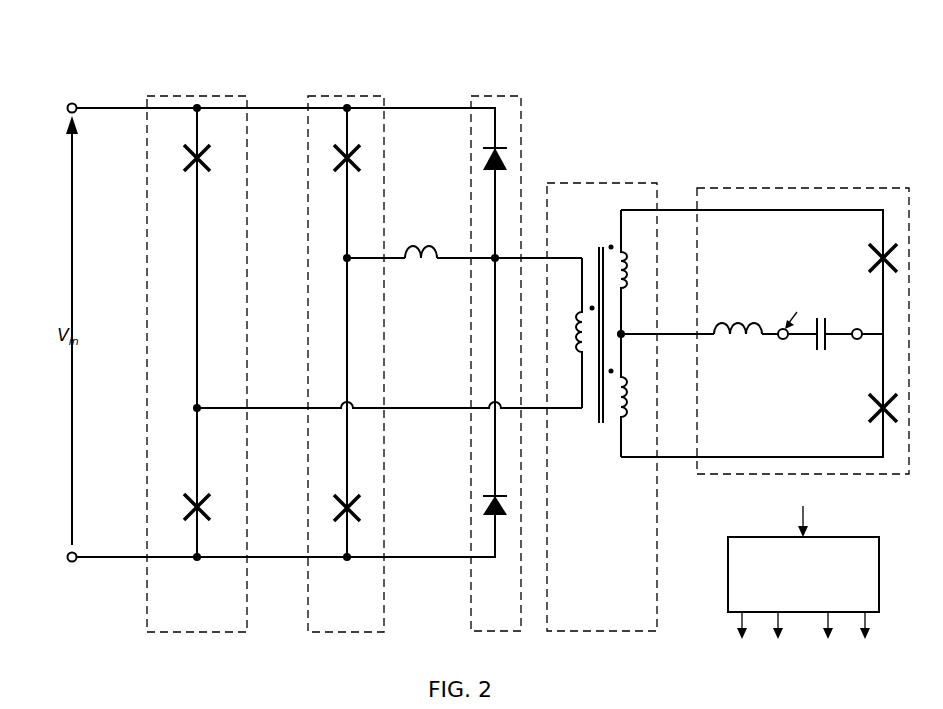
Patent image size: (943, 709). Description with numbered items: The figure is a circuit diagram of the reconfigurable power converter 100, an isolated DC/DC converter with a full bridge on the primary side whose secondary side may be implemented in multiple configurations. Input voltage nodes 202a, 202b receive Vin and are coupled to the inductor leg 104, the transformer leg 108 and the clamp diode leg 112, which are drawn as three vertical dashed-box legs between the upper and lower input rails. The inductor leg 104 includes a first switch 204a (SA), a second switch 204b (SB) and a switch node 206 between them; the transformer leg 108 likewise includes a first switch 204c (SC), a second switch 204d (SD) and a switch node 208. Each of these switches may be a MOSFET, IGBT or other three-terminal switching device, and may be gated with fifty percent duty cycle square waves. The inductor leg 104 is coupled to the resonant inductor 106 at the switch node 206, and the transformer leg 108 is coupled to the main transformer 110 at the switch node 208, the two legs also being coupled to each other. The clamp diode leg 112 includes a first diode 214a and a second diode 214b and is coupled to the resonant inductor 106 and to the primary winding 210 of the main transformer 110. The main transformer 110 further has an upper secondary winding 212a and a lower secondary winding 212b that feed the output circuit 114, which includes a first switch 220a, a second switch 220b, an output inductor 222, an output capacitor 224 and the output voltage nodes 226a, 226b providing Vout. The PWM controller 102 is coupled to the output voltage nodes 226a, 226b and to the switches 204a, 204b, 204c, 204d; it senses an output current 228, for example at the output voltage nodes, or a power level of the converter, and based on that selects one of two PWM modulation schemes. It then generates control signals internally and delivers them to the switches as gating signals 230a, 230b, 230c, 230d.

The reconfigurable power converter 100 is at (78, 76).
The pulse-width modulation (PWM) controller 102 is at (778, 392).
The inductor leg 104 is at (345, 375).
The resonant inductor 106 is at (424, 250).
The transformer leg 108 is at (196, 369).
The main transformer 110 is at (629, 407).
The clamp diode leg 112 is at (507, 370).
The output circuit 114 is at (763, 314).
The input voltage node 202a is at (68, 112).
The input voltage node 202b is at (68, 561).
The first switch 204a is at (372, 158).
The second switch 204b is at (372, 504).
The first switch 204c is at (212, 176).
The second switch 204d is at (212, 496).
The switch node 206 is at (343, 257).
The switch node 208 is at (199, 404).
The primary winding 210 is at (586, 312).
The upper secondary winding 212a is at (624, 298).
The lower secondary winding 212b is at (624, 378).
The first diode 214a is at (505, 157).
The second diode 214b is at (506, 497).
The first switch 220a is at (860, 254).
The second switch 220b is at (860, 414).
The output inductor 222 is at (722, 322).
The output capacitor 224 is at (816, 348).
The output voltage node 226a is at (778, 340).
The output voltage node 226b is at (860, 340).
The output current 228 is at (806, 520).
The gating signal 230a is at (738, 624).
The gating signal 230b is at (786, 626).
The gating signal 230c is at (834, 626).
The gating signal 230d is at (870, 624).